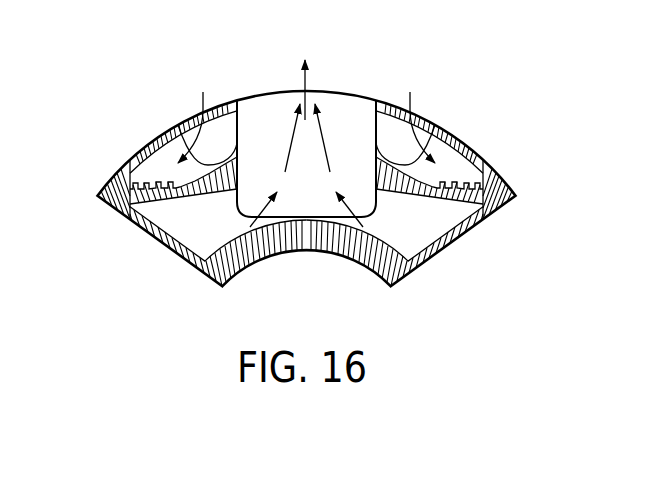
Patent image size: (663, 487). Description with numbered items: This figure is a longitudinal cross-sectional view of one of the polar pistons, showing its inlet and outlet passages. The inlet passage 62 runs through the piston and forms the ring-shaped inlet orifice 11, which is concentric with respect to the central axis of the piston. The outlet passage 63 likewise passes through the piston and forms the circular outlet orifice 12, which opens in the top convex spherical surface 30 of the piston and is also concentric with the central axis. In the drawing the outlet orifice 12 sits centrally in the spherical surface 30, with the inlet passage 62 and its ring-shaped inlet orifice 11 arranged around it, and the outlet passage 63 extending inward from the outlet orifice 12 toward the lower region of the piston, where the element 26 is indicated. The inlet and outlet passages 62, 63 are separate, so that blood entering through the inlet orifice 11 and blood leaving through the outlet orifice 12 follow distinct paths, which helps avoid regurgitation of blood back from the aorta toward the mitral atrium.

The ring-shaped inlet orifice 11 is at (223, 115).
The circular outlet orifice 12 is at (342, 108).
The bottom wall 26 is at (447, 253).
The top convex spherical surface 30 is at (473, 147).
The inlet passage 62 is at (155, 163).
The outlet passage 63 is at (173, 213).